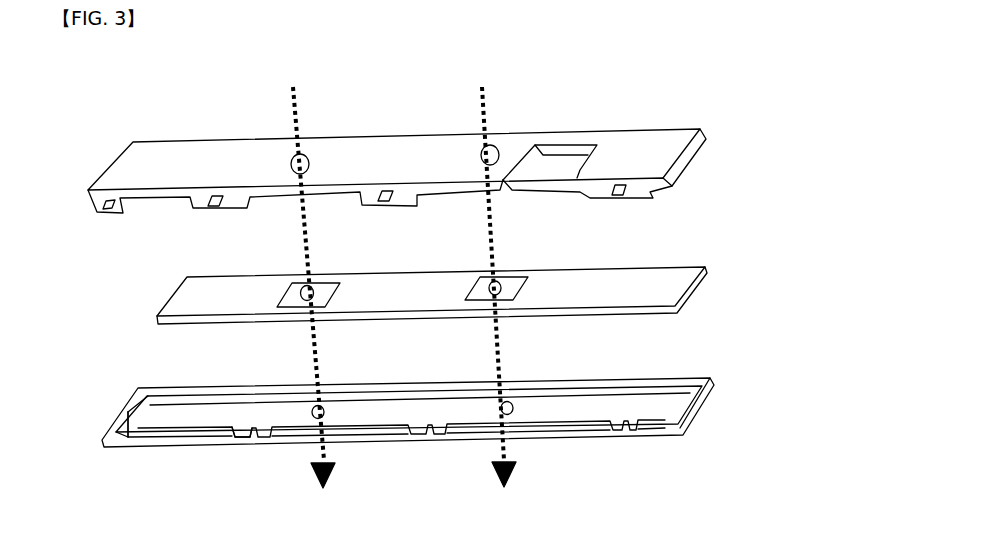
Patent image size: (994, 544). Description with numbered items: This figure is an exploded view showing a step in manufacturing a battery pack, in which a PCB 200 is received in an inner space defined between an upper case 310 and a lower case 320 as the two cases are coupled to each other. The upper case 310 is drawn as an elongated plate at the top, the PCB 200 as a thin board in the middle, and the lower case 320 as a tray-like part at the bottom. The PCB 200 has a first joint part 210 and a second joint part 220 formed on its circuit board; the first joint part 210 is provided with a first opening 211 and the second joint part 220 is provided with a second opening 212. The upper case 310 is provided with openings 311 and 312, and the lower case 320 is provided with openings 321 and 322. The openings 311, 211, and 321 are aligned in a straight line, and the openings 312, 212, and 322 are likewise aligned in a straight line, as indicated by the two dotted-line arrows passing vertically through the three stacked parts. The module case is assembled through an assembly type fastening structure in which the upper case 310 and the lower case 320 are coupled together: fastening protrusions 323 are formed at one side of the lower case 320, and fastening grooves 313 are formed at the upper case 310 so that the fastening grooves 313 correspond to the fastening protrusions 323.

The upper case 310 is at (723, 141).
The first opening 311 is at (302, 154).
The second opening 312 is at (492, 145).
The fastening grooves 313 is at (216, 208).
The PCB 200 is at (725, 270).
The first joint part 210 is at (327, 287).
The first opening 211 is at (295, 291).
The second opening 212 is at (488, 288).
The second joint part 220 is at (515, 284).
The lower case 320 is at (724, 388).
The first opening 321 is at (327, 412).
The second opening 322 is at (514, 407).
The fastening protrusions 323 is at (247, 427).